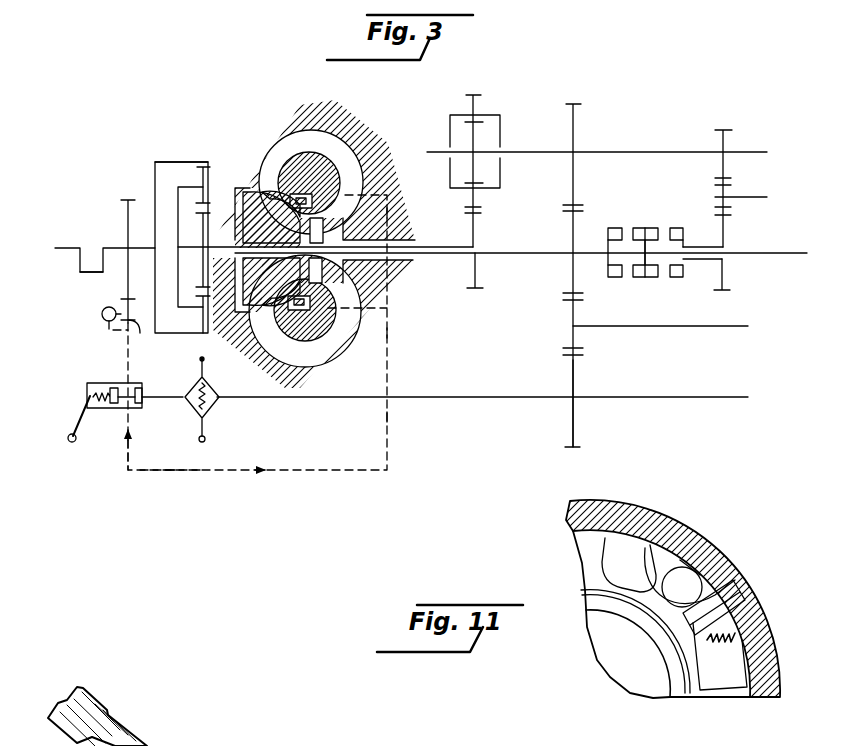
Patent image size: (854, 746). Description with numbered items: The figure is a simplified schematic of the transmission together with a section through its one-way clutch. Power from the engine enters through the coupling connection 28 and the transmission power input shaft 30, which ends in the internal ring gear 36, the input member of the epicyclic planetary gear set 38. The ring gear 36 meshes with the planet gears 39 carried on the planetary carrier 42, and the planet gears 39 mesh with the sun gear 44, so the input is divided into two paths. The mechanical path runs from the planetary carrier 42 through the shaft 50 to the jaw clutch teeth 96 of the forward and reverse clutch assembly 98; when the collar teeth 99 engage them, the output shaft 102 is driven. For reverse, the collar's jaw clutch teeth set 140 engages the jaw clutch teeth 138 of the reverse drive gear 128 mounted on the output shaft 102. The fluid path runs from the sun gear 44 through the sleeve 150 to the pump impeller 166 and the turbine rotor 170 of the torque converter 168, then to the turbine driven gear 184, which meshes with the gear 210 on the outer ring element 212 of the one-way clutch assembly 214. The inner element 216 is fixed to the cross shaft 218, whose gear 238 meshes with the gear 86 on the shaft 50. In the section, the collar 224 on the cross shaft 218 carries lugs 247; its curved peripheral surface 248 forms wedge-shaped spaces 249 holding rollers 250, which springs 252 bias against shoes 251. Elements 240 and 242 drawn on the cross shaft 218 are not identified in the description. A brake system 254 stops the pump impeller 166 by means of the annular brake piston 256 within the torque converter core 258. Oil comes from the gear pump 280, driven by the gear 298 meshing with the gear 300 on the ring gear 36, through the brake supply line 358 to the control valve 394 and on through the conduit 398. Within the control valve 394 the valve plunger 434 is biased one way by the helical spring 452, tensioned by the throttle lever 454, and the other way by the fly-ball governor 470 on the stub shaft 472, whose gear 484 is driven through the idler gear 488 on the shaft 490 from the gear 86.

In FIG. 3, the coupling connection 28 is at (88, 282).
In FIG. 3, the transmission power input shaft 30 is at (112, 247).
In FIG. 3, the internal ring gear 36 is at (200, 161).
In FIG. 3, the epicyclic planetary gear set 38 is at (178, 158).
In FIG. 3, the planet gears 39 is at (205, 182).
In FIG. 3, the planetary carrier 42 is at (178, 212).
In FIG. 3, the sun gear 44 is at (203, 240).
In FIG. 3, the shaft 50 is at (514, 254).
In FIG. 3, the gear 86 is at (568, 290).
In FIG. 3, the jaw clutch teeth 96 is at (615, 278).
In FIG. 3, the forward and reverse clutch assembly 98 is at (652, 216).
In FIG. 3, the jaw clutch teeth 99 is at (645, 278).
In FIG. 3, the output shaft 102 is at (755, 253).
In FIG. 3, the reverse drive gear 128 is at (730, 286).
In FIG. 3, the jaw clutch teeth 138 is at (684, 277).
In FIG. 3, the jaw clutch teeth set 140 is at (656, 276).
In FIG. 3, the sleeve 150 is at (275, 296).
In FIG. 3, the pump impeller 166 is at (264, 195).
In FIG. 3, the torque converter 168 is at (327, 146).
In FIG. 3, the turbine rotor 170 is at (323, 223).
In FIG. 3, the turbine driven gear 184 is at (470, 276).
In FIG. 3, the gear 210 is at (480, 207).
In FIG. 3, the outer ring element 212 is at (500, 177).
In FIG. 11, the outer ring element 212 is at (695, 575).
In FIG. 3, the one-way clutch assembly 214 is at (502, 114).
In FIG. 3, the inner element 216 is at (477, 142).
In FIG. 3, the cross shaft 218 is at (650, 152).
In FIG. 11, the cross shaft 218 is at (605, 652).
In FIG. 11, the collar 224 is at (582, 598).
In FIG. 3, the gear 238 is at (576, 193).
In FIG. 3, the clutch 240 is at (727, 177).
In FIG. 3, the clutch 242 is at (729, 210).
In FIG. 11, the lugs 247 is at (640, 540).
In FIG. 11, the peripheral surface 248 is at (728, 576).
In FIG. 11, the wedge-shaped spaces 249 is at (675, 560).
In FIG. 11, the rollers 250 is at (702, 583).
In FIG. 11, the shoes 251 is at (740, 600).
In FIG. 11, the springs 252 is at (755, 625).
In FIG. 3, the brake system 254 is at (120, 440).
In FIG. 3, the annular brake piston 256 is at (320, 197).
In FIG. 3, the torque converter core 258 is at (305, 334).
In FIG. 3, the gear pump 280 is at (102, 316).
In FIG. 3, the gear 298 is at (138, 333).
In FIG. 3, the gear 300 is at (126, 298).
In FIG. 3, the brake supply line 358 is at (130, 372).
In FIG. 3, the control valve 394 is at (85, 383).
In FIG. 3, the conduit 398 is at (147, 472).
In FIG. 3, the valve plunger 434 is at (141, 390).
In FIG. 3, the helical spring 452 is at (114, 388).
In FIG. 3, the lever 454 is at (87, 400).
In FIG. 3, the fly-ball governor 470 is at (208, 426).
In FIG. 3, the stub shaft 472 is at (481, 397).
In FIG. 3, the gear 484 is at (576, 377).
In FIG. 3, the idler gear 488 is at (575, 343).
In FIG. 3, the shaft 490 is at (646, 327).